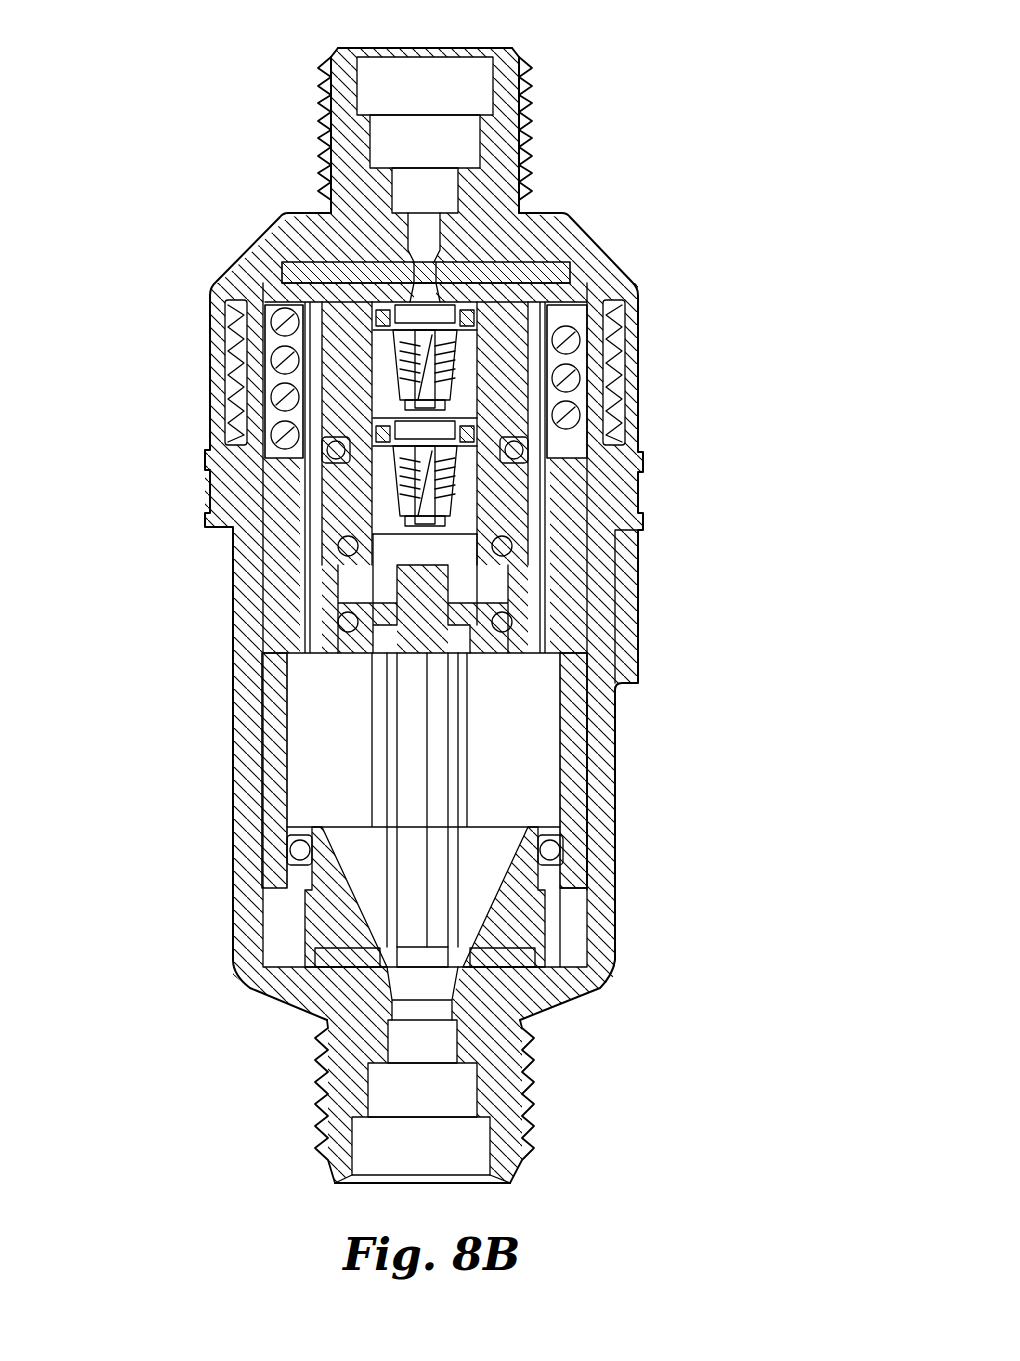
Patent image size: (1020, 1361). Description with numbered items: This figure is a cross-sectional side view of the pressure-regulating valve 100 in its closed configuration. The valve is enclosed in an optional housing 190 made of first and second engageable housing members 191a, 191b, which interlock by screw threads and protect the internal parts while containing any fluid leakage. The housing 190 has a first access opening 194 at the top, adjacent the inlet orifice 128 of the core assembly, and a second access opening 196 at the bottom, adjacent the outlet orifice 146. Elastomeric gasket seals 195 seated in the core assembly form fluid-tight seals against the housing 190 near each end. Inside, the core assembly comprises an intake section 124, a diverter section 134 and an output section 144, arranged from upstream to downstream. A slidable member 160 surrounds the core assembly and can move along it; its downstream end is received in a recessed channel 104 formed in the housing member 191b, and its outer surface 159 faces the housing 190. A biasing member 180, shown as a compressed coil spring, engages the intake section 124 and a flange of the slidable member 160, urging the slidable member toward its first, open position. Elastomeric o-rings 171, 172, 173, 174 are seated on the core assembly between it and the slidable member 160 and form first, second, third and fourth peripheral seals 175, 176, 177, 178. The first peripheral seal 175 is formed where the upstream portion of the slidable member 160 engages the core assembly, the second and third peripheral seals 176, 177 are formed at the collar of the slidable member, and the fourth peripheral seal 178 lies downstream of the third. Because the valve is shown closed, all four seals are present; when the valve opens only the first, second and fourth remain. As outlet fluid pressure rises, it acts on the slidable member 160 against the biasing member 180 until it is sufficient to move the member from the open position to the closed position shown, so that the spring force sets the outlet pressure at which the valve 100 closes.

The pressure-regulating valve 100 is at (100, 165).
The housing 190 is at (322, 131).
The first access opening 194 is at (453, 47).
The first housing member 191a is at (507, 148).
The inlet orifice 128 is at (425, 280).
The elastomeric gasket seals 195 is at (515, 268).
The biasing member 180 is at (572, 343).
The first peripheral seal 175 is at (330, 450).
The elastomeric o-ring 171 is at (520, 450).
The intake section 124 is at (610, 482).
The second peripheral seal 176 is at (340, 546).
The elastomeric o-ring 172 is at (510, 548).
The third peripheral seal 177 is at (340, 622).
The elastomeric o-ring 173 is at (510, 624).
The diverter section 134 is at (560, 653).
The slidable member 160 is at (580, 715).
The outer surface 159 is at (590, 795).
The fourth peripheral seal 178 is at (288, 850).
The elastomeric o-ring 174 is at (555, 848).
The output section 144 is at (537, 878).
The recessed channel 104 is at (573, 932).
The outlet orifice 146 is at (430, 970).
The second housing member 191b is at (502, 1072).
The second access opening 196 is at (460, 1183).